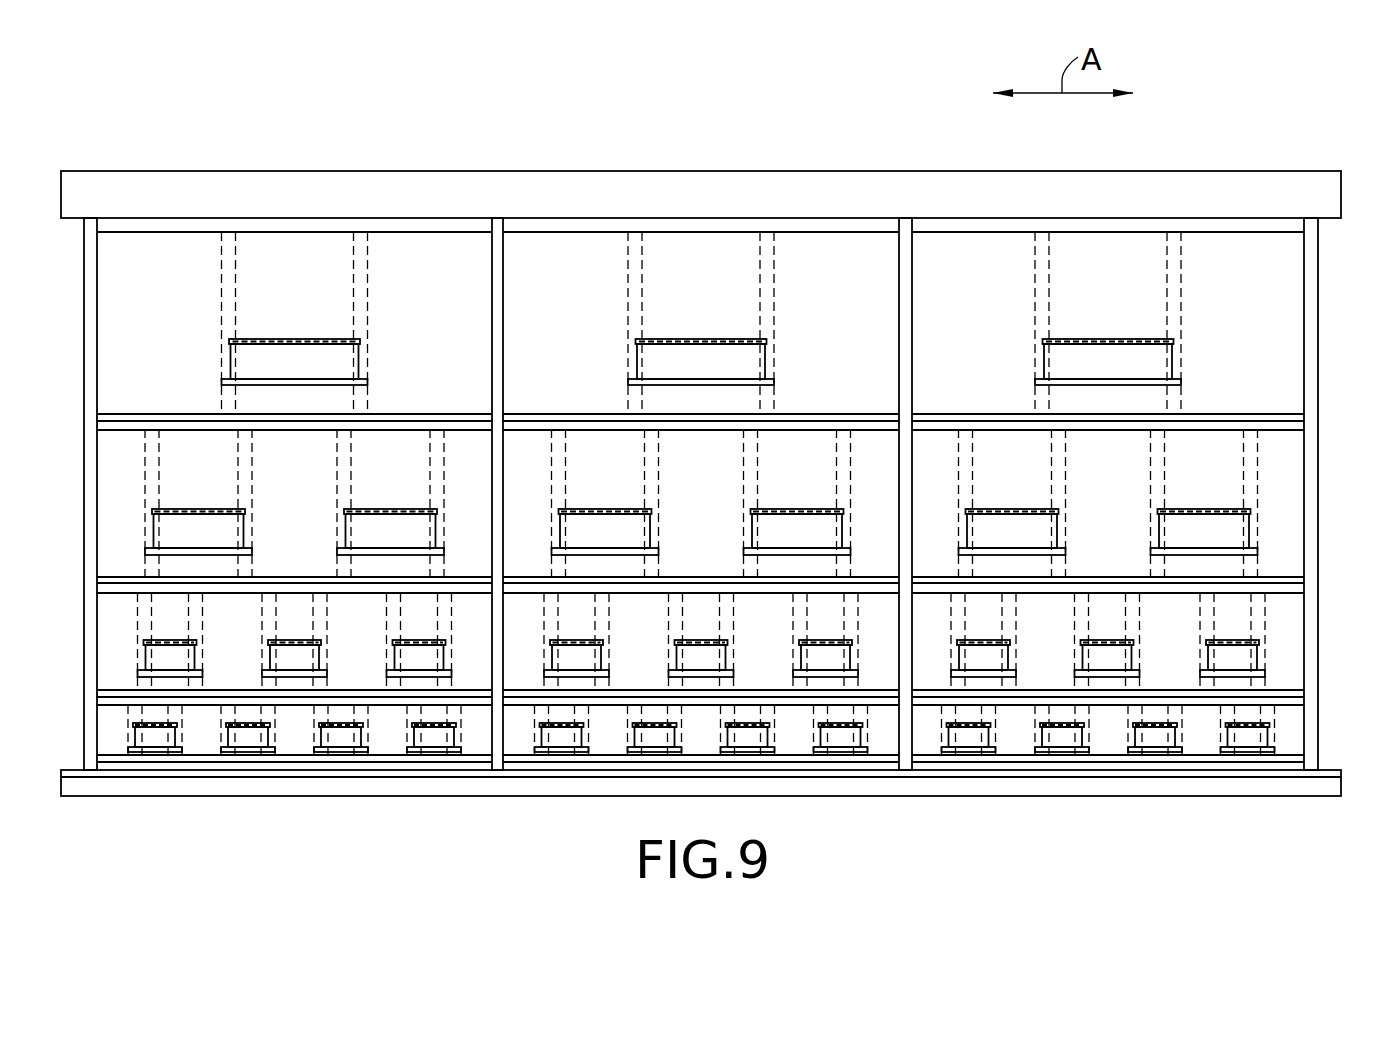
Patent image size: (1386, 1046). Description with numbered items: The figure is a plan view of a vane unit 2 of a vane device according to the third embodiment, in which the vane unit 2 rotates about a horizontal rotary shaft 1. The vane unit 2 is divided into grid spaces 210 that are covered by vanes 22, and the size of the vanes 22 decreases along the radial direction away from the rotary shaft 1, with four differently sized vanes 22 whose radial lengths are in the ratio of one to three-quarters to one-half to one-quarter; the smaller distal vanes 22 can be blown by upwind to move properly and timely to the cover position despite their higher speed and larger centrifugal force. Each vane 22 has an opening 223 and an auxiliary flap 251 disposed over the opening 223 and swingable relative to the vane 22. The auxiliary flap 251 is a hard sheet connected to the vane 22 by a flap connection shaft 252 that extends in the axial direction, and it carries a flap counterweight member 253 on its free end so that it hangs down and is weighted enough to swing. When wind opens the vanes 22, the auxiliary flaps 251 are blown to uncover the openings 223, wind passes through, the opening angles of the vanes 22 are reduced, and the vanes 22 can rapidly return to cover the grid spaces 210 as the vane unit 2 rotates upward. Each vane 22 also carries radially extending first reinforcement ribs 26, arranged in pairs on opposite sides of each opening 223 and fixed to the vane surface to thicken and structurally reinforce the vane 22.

The rotary shaft 1 is at (580, 171).
The vane unit 2 is at (702, 485).
The grid space 210 is at (96, 334).
The vane 22 is at (113, 462).
The opening 223 is at (704, 482).
The first reinforcement rib 26 is at (226, 233).
The auxiliary flap 251 is at (1230, 532).
The flap connection shaft 252 is at (1215, 512).
The flap counterweight member 253 is at (1212, 550).